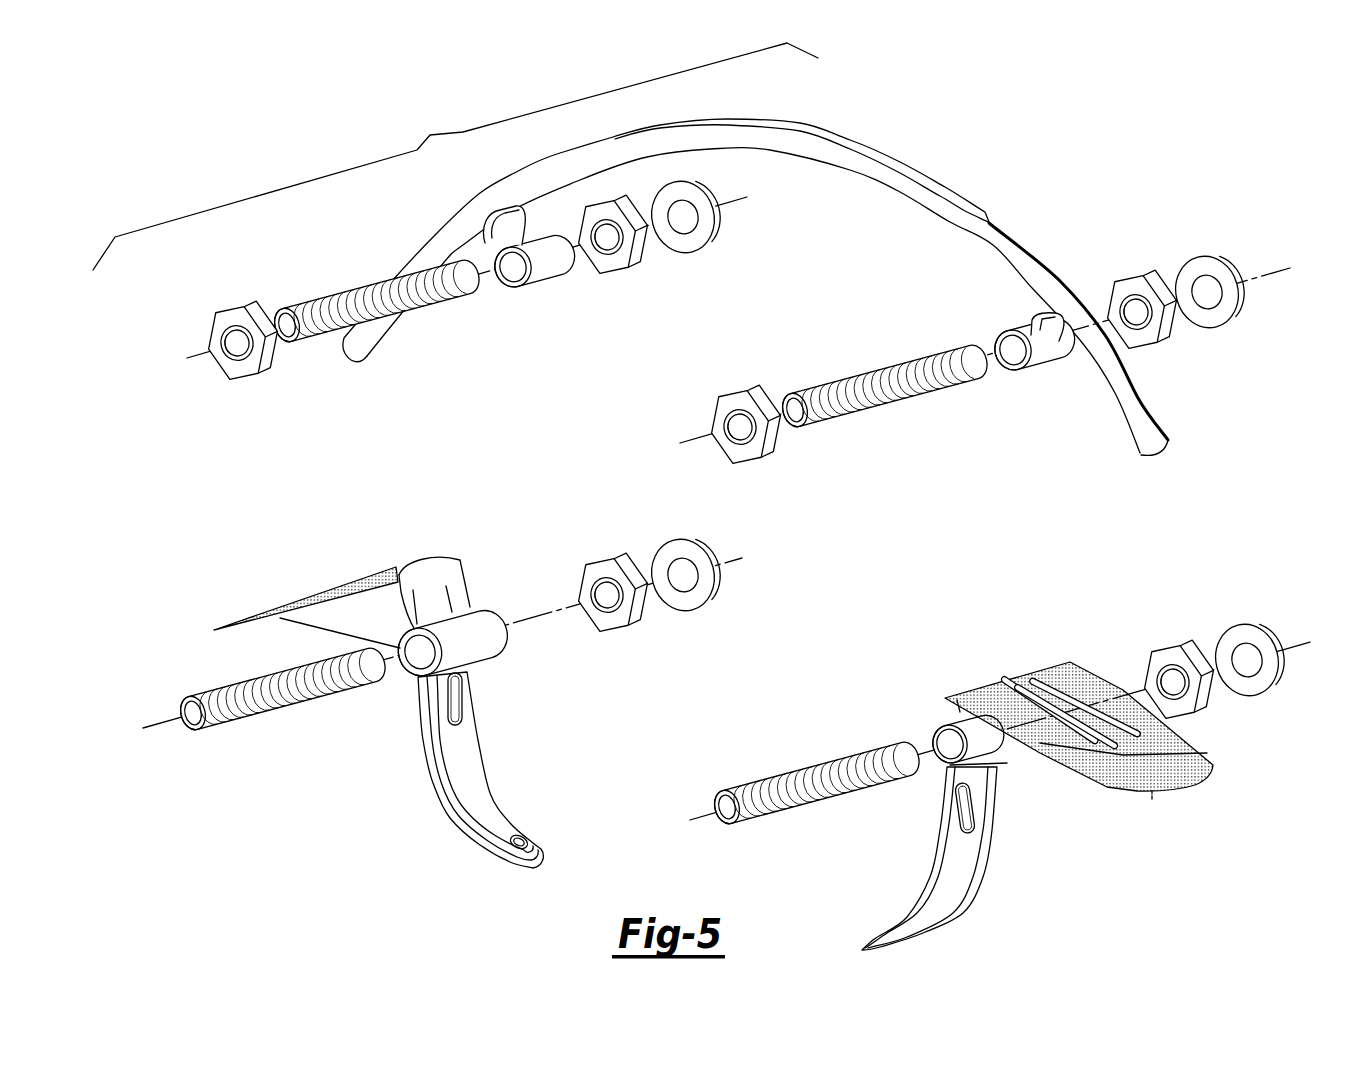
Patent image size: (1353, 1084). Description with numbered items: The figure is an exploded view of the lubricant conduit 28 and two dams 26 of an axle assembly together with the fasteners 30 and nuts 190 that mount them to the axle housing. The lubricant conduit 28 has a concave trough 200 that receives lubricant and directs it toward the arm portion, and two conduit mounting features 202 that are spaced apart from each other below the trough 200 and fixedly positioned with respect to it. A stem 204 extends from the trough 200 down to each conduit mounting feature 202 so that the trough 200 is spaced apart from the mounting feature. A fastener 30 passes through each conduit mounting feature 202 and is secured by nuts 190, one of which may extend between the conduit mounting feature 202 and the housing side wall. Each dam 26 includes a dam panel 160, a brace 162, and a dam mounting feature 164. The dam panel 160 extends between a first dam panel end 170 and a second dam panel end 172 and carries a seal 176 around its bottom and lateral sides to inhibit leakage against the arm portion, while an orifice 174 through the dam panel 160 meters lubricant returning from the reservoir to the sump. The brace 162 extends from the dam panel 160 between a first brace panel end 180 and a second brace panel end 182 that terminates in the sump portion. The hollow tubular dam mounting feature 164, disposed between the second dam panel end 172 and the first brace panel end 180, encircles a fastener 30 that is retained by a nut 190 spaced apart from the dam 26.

The dam 26 is at (702, 724).
The lubricant conduit 28 is at (840, 133).
The fastener 30 is at (350, 292).
The dam panel 160 is at (350, 580).
The brace 162 is at (475, 743).
The dam mounting feature 164 is at (480, 638).
The first dam panel end 170 is at (1152, 800).
The second dam panel end 172 is at (460, 592).
The orifice 174 is at (1030, 680).
The seal 176 is at (210, 633).
The first brace panel end 180 is at (465, 690).
The second brace panel end 182 is at (543, 867).
The nut 190 is at (262, 373).
The trough 200 is at (900, 170).
The conduit mounting feature 202 is at (533, 290).
The stem 204 is at (518, 224).